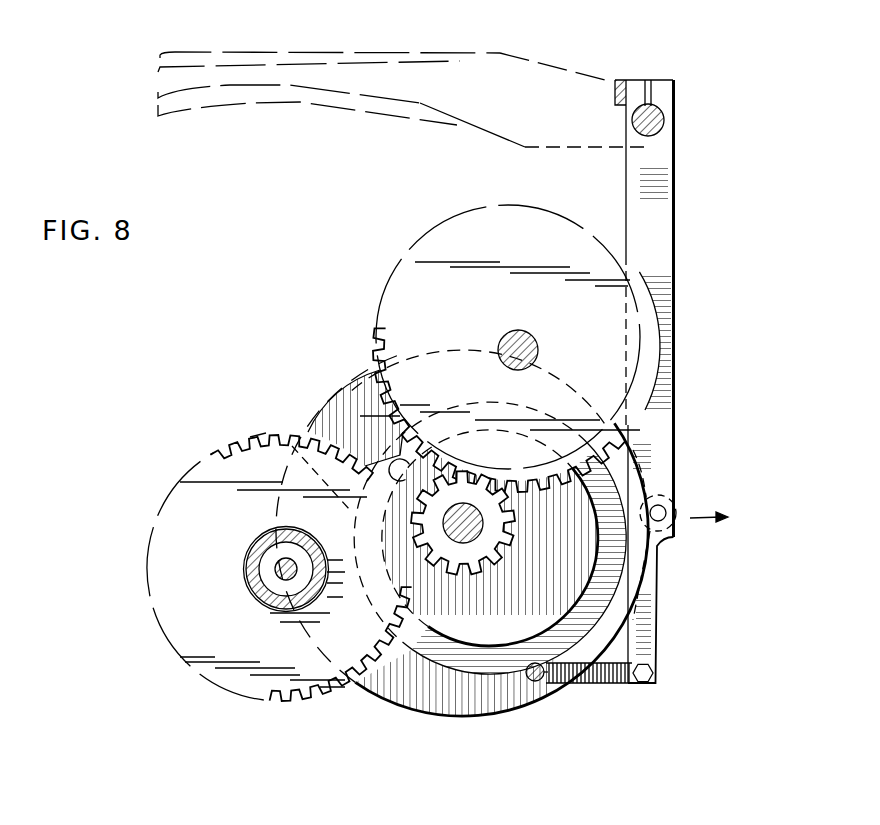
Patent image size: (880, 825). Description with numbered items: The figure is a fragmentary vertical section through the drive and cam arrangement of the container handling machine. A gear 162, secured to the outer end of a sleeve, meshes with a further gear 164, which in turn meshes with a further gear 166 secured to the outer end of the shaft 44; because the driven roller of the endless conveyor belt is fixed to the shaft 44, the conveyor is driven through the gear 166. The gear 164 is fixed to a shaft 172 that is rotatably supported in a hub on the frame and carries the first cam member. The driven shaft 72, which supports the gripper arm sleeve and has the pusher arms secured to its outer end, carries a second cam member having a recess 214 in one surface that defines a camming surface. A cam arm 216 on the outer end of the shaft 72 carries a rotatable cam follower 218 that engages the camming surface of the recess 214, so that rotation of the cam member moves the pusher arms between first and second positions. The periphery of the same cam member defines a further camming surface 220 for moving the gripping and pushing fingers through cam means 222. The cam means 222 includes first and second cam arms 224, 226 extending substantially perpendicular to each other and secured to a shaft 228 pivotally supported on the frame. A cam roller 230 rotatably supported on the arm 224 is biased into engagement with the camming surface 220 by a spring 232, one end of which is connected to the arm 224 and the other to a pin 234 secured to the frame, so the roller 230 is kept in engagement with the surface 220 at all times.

The shaft 44 is at (504, 340).
The shaft 72 is at (286, 569).
The gear 162 is at (190, 470).
The gear 164 is at (457, 556).
The gear 166 is at (440, 236).
The shaft 172 is at (478, 535).
The recess 214 is at (398, 458).
The cam arm 216 is at (290, 440).
The cam follower 218 is at (372, 412).
The camming surface 220 is at (470, 718).
The cam means 222 is at (680, 181).
The cam arm 224 is at (655, 252).
The cam arm 226 is at (408, 62).
The shaft 228 is at (641, 106).
The cam roller 230 is at (668, 496).
The spring 232 is at (605, 688).
The pin 234 is at (540, 682).